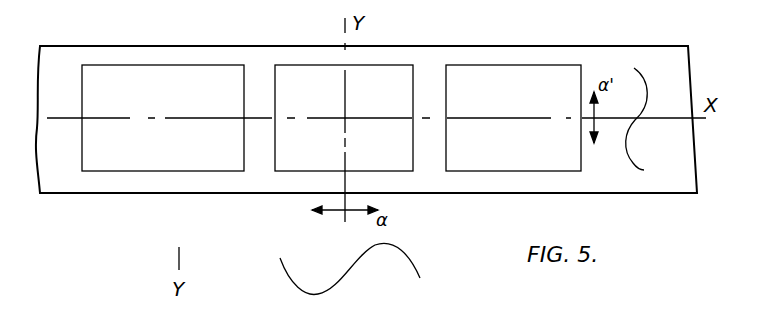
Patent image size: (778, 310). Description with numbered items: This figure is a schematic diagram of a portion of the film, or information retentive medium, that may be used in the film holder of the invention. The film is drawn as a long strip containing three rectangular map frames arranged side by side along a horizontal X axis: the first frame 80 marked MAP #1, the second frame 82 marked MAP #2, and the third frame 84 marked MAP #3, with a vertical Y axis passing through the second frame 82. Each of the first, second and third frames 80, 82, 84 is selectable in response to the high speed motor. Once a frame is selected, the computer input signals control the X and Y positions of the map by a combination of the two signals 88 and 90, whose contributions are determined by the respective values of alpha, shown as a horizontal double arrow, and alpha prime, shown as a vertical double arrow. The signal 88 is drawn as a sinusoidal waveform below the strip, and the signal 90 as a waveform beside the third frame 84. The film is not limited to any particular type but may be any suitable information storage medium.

The first frame 80 is at (145, 163).
The second frame 82 is at (300, 165).
The third frame 84 is at (483, 163).
The signal 88 is at (416, 264).
The signal 90 is at (622, 147).